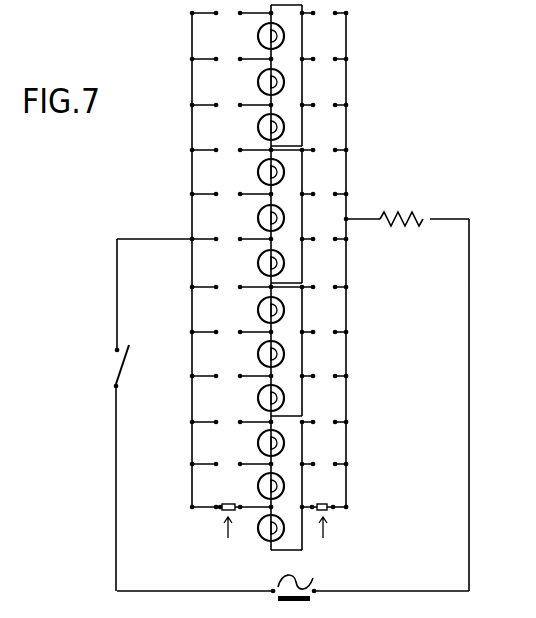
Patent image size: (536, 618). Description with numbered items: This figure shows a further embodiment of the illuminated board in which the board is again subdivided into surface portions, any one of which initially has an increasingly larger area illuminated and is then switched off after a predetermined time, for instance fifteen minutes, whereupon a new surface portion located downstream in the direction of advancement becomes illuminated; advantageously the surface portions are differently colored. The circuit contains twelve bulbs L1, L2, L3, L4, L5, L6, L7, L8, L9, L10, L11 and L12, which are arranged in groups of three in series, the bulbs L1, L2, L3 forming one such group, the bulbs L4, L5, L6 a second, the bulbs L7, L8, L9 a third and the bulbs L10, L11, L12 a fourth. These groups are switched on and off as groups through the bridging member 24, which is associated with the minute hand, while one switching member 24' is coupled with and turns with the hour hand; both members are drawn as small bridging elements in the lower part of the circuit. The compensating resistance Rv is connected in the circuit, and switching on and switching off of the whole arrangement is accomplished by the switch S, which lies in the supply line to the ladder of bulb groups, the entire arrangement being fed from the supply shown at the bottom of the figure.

The bulb L1 is at (258, 540).
The bulb L2 is at (258, 486).
The bulb L3 is at (258, 443).
The bulb L4 is at (258, 398).
The bulb L5 is at (258, 354).
The bulb L6 is at (258, 310).
The bulb L7 is at (258, 263).
The bulb L8 is at (258, 218).
The bulb L9 is at (258, 172).
The bulb L10 is at (258, 127).
The bulb L11 is at (258, 82).
The bulb L12 is at (258, 36).
The switch S is at (122, 360).
The compensating resistance Rv is at (400, 210).
The bridging member 24 is at (205, 522).
The switching member 24' is at (350, 523).